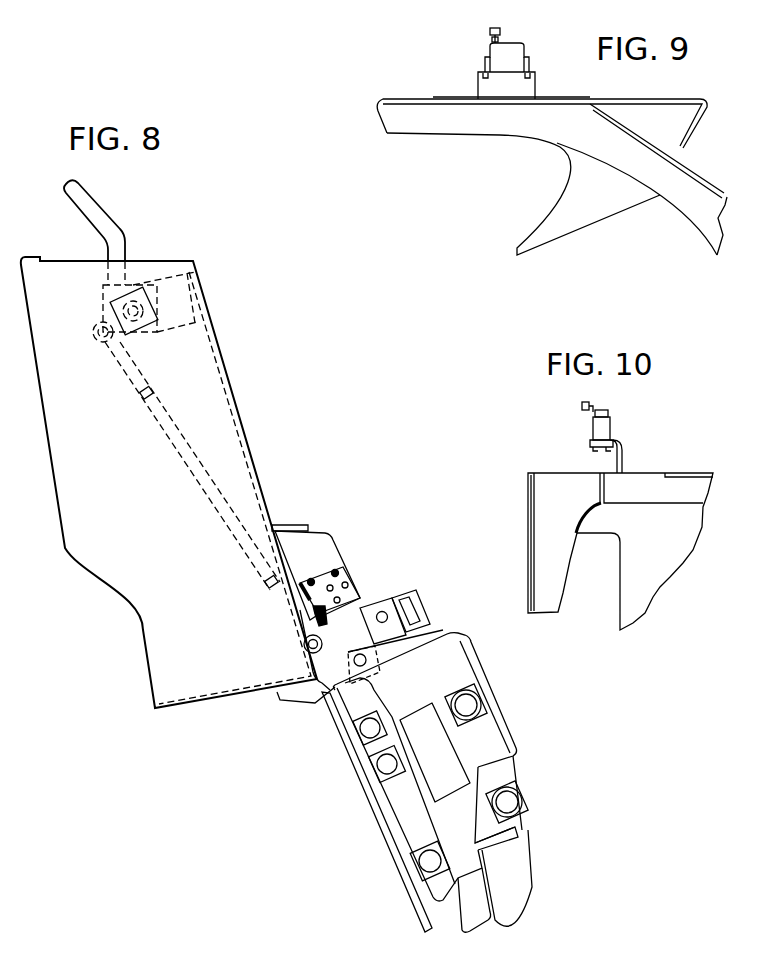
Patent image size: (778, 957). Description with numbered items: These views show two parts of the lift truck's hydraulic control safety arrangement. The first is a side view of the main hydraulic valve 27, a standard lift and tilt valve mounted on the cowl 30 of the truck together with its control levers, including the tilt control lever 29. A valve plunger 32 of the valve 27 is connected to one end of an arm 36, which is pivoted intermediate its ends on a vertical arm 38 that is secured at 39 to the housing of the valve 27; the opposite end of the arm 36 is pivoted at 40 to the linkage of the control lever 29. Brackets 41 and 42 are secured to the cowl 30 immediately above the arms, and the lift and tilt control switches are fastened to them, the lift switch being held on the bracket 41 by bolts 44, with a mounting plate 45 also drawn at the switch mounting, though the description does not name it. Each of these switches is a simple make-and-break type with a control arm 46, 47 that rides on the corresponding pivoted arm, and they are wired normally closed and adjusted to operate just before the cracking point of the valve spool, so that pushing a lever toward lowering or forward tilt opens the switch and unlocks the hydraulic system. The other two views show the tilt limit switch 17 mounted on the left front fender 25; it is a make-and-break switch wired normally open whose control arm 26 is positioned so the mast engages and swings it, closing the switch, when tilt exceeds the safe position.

In FIG. 9, the lift limit switch 17 is at (523, 53).
In FIG. 10, the lift limit switch 17 is at (608, 422).
In FIG. 9, the front fender 25 is at (472, 128).
In FIG. 10, the front fender 25 is at (638, 482).
In FIG. 9, the control arm 26 is at (490, 38).
In FIG. 10, the control arm 26 is at (577, 405).
In FIG. 8, the main hydraulic valve 27 is at (441, 640).
In FIG. 8, the tilt control lever 29 is at (100, 215).
In FIG. 8, the cowl 30 is at (195, 698).
In FIG. 8, the valve plunger 32 is at (400, 620).
In FIG. 8, the arm 36 is at (366, 604).
In FIG. 8, the vertical arm 38 is at (340, 663).
In FIG. 8, the securing point 39 is at (366, 661).
In FIG. 8, the pivot 40 is at (305, 650).
In FIG. 8, the bracket 41 is at (316, 550).
In FIG. 8, the bracket 42 is at (323, 532).
In FIG. 8, the bolts 44 is at (335, 575).
In FIG. 8, the mounting plate 45 is at (352, 587).
In FIG. 8, the control arm 46 is at (267, 617).
In FIG. 8, the control arm 47 is at (320, 607).